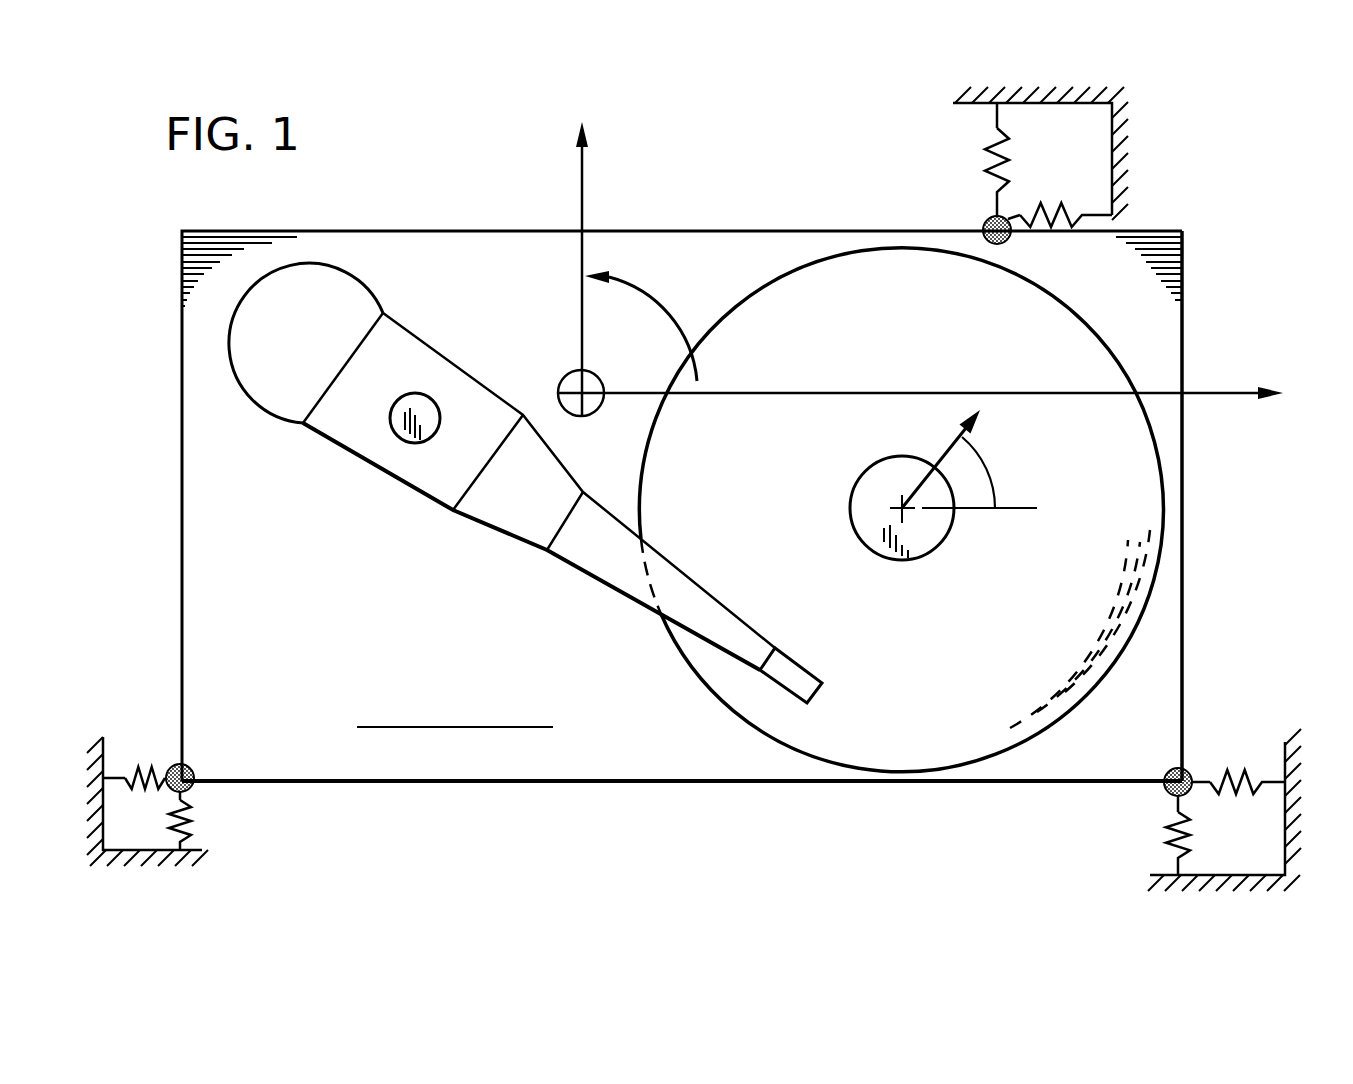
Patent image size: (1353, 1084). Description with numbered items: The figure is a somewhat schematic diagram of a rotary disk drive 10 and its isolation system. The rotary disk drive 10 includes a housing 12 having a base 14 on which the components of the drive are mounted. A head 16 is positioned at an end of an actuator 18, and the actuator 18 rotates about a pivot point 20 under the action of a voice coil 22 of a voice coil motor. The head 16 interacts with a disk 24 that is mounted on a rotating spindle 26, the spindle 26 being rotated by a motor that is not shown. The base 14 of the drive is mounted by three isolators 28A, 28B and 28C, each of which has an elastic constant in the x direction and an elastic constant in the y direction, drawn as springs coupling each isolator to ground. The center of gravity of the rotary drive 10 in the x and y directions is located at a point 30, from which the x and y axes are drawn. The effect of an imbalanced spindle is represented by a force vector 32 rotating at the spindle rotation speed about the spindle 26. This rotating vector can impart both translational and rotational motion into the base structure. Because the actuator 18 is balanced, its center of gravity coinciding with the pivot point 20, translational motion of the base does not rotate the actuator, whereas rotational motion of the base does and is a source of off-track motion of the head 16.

The rotary disk drive 10 is at (1222, 268).
The housing 12 is at (1183, 612).
The base 14 is at (1162, 690).
The head 16 is at (792, 670).
The actuator 18 is at (618, 572).
The pivot point 20 is at (403, 433).
The voice coil 22 is at (347, 302).
The disk 24 is at (927, 350).
The spindle 26 is at (863, 533).
The isolator 28A is at (192, 766).
The isolator 28B is at (1168, 770).
The isolator 28C is at (985, 222).
The center of gravity point 30 is at (560, 384).
The force vector 32 is at (972, 416).